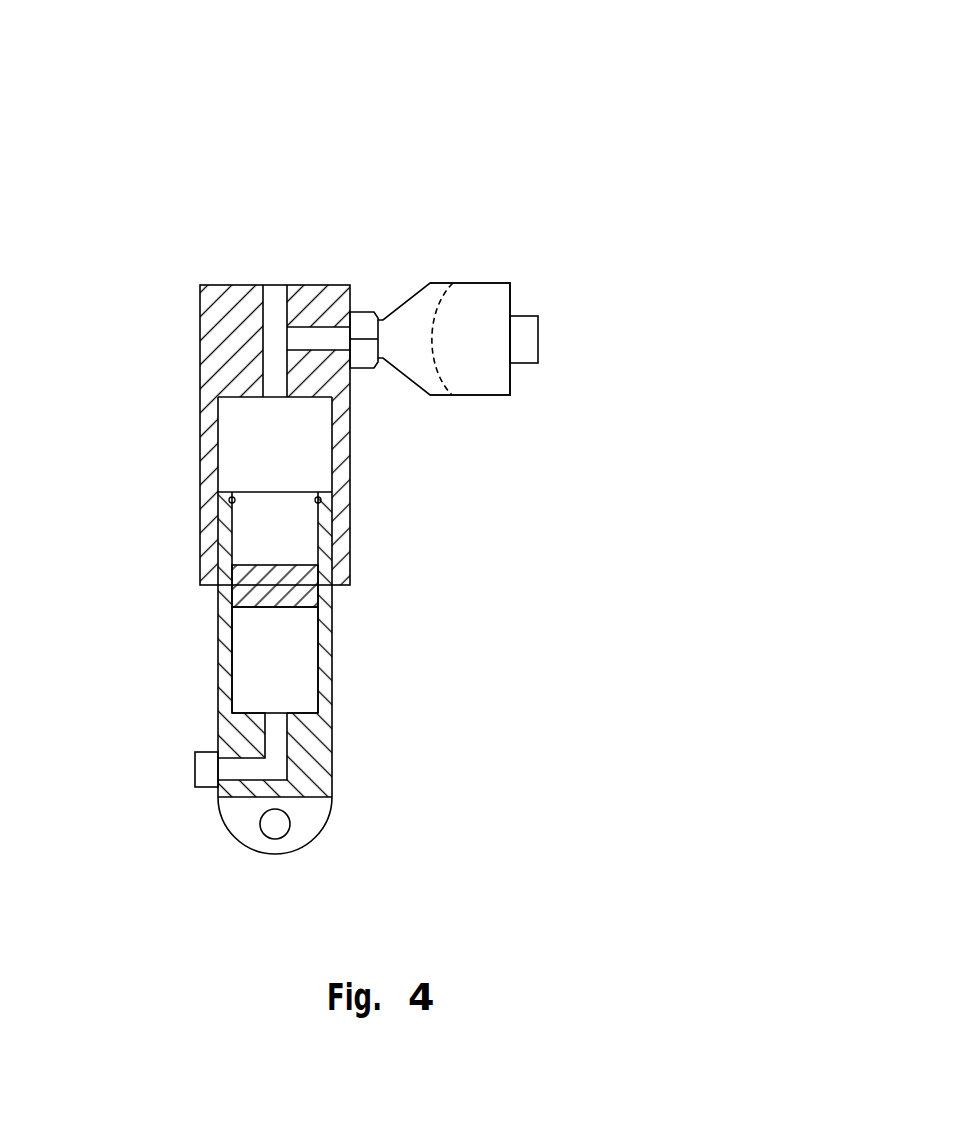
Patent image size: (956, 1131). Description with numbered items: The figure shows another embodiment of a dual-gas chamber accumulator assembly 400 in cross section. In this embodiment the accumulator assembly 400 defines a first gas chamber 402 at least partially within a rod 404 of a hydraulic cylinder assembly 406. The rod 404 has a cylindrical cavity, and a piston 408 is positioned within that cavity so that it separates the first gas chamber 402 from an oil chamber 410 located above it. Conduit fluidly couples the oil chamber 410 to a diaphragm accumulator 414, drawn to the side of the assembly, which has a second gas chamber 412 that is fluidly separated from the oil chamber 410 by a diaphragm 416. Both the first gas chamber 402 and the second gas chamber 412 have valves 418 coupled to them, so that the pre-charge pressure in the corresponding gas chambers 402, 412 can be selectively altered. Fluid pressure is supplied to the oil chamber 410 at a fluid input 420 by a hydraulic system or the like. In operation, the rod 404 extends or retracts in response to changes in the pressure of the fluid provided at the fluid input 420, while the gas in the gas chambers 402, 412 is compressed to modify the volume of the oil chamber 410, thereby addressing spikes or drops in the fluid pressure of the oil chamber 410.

The dual-gas chamber accumulator assembly 400 is at (511, 122).
The first gas chamber 402 is at (262, 662).
The rod 404 is at (332, 742).
The hydraulic cylinder assembly 406 is at (203, 886).
The piston 408 is at (293, 596).
The oil chamber 410 is at (245, 428).
The second gas chamber 412 is at (498, 298).
The diaphragm accumulator 414 is at (508, 425).
The diaphragm 416 is at (437, 322).
The valves 418 is at (195, 767).
The fluid input 420 is at (276, 285).